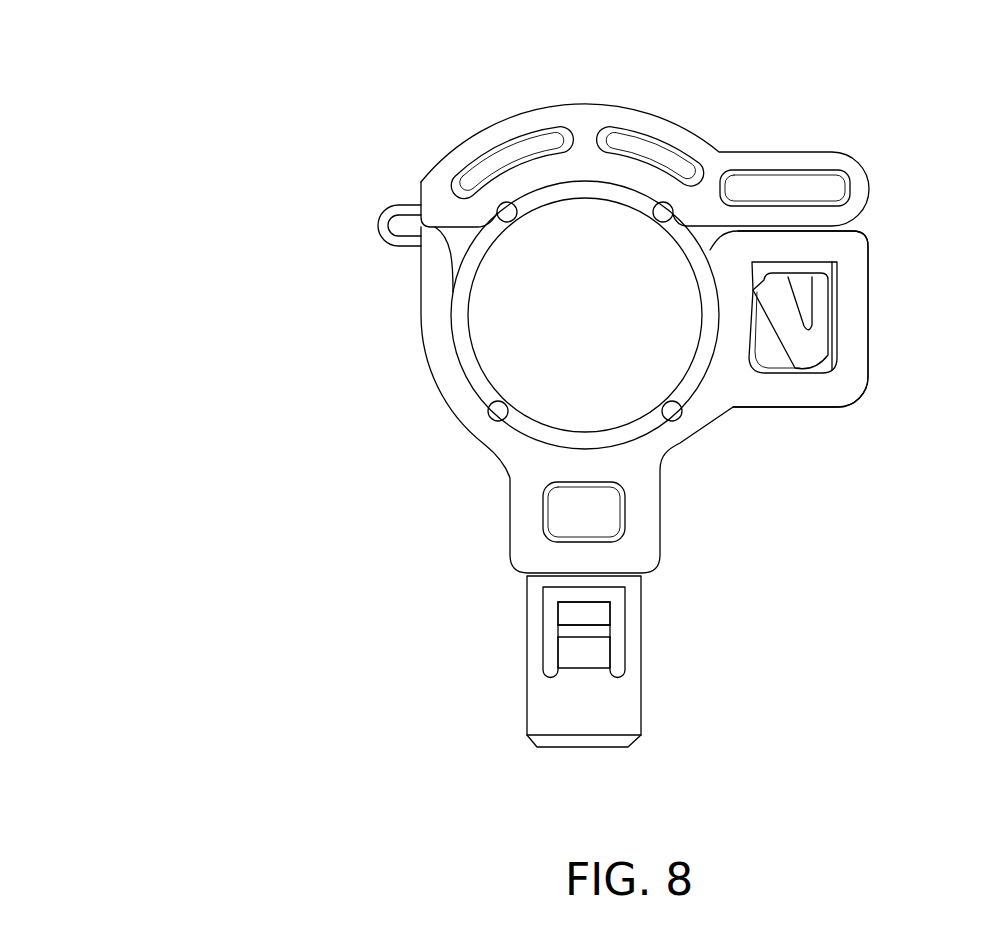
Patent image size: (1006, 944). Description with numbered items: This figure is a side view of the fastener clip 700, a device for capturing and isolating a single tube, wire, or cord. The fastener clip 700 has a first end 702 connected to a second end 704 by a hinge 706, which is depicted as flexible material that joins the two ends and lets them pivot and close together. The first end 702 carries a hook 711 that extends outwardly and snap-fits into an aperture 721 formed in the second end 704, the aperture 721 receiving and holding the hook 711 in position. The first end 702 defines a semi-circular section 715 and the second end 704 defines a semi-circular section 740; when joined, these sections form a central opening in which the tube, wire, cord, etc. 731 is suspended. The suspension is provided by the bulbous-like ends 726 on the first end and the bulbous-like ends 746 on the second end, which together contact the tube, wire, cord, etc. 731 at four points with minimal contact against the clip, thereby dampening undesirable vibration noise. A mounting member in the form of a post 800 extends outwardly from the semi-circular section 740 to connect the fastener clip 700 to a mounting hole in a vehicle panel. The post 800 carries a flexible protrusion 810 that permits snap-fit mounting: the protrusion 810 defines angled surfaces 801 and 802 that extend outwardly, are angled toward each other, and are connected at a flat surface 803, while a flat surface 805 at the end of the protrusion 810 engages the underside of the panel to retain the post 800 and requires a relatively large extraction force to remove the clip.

The fastener clip 700 is at (322, 205).
The first end 702 is at (842, 160).
The second end 704 is at (855, 245).
The hinge 706 is at (388, 243).
The hook 711 is at (818, 347).
The semi-circular section 715 is at (662, 125).
The aperture 721 is at (805, 280).
The bulbous-like end 726 is at (505, 210).
The tube, wire, cord, etc. 731 is at (592, 222).
The semi-circular section 740 is at (527, 457).
The bulbous-like end 746 is at (498, 413).
The post 800 is at (622, 703).
The angled surface 801 is at (578, 650).
The angled surface 802 is at (572, 618).
The flat surface 803 is at (600, 630).
The flat surface 805 is at (588, 600).
The flexible protrusion 810 is at (597, 610).